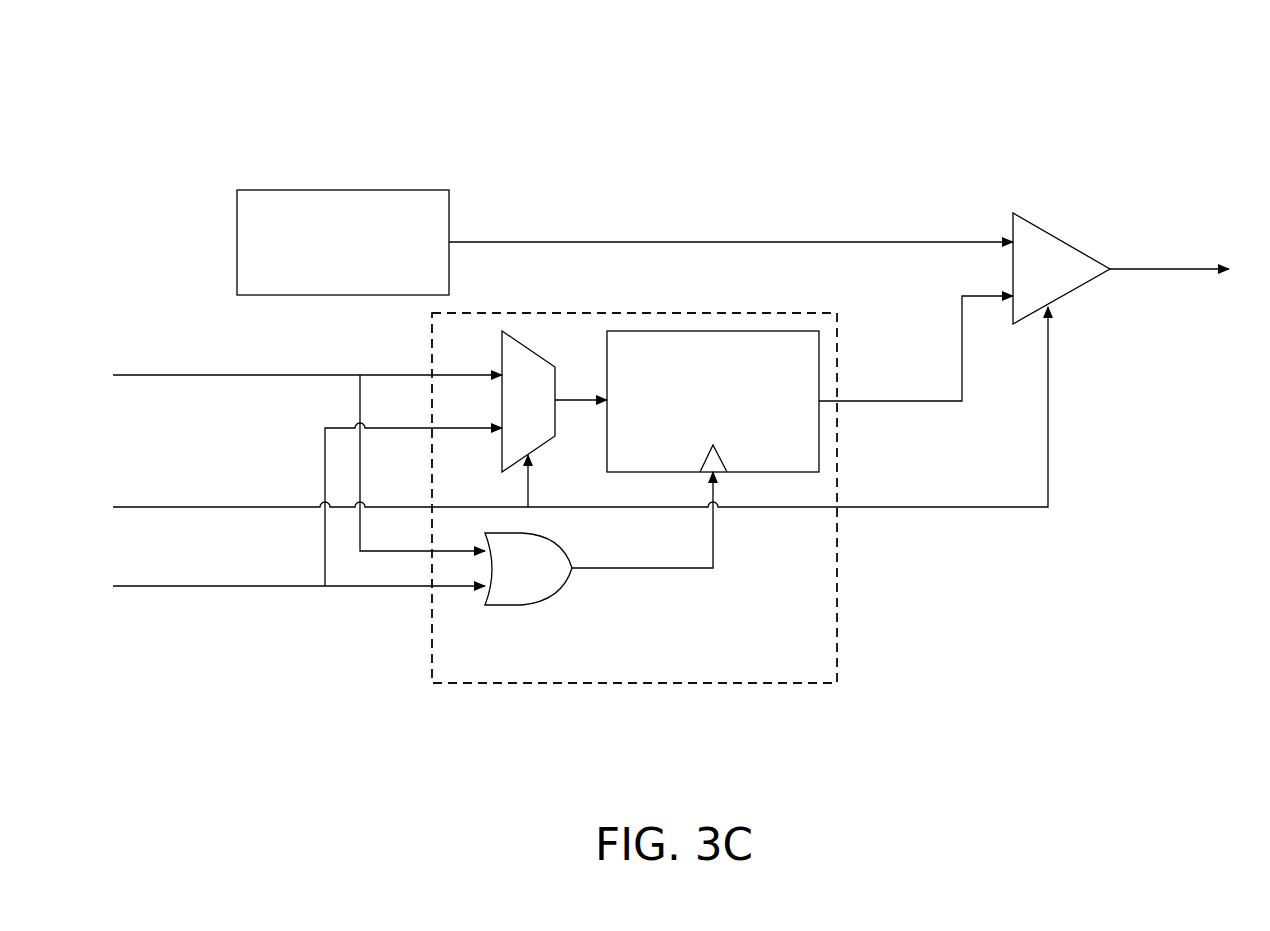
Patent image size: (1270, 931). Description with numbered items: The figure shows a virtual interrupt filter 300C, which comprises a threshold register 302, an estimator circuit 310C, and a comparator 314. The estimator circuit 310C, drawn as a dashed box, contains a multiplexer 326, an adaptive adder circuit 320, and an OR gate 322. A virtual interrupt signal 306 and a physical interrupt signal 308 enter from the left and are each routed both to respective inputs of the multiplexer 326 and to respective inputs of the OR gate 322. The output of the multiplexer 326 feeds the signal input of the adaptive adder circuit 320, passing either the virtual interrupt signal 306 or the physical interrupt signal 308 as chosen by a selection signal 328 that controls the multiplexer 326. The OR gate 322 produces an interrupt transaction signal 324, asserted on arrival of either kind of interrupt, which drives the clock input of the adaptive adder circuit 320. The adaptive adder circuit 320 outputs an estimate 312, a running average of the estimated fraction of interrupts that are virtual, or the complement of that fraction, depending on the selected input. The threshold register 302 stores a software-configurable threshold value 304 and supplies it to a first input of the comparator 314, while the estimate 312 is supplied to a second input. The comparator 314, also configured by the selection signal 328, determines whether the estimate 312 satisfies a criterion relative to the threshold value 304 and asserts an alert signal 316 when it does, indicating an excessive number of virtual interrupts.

The virtual interrupt filter 300C is at (500, 86).
The threshold register 302 is at (410, 266).
The threshold value 304 is at (731, 228).
The virtual interrupt signal 306 is at (307, 450).
The physical interrupt signal 308 is at (307, 519).
The estimator circuit 310C is at (828, 673).
The estimate 312 is at (916, 362).
The comparator 314 is at (1067, 275).
The alert signal 316 is at (1169, 255).
The adaptive adder circuit 320 is at (732, 391).
The OR gate 322 is at (545, 580).
The interrupt transaction signal 324 is at (666, 544).
The multiplexer 326 is at (548, 411).
The selection signal 328 is at (580, 407).